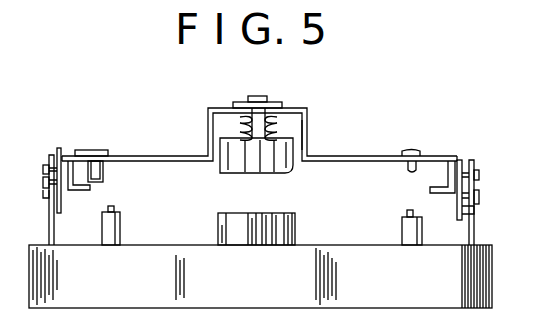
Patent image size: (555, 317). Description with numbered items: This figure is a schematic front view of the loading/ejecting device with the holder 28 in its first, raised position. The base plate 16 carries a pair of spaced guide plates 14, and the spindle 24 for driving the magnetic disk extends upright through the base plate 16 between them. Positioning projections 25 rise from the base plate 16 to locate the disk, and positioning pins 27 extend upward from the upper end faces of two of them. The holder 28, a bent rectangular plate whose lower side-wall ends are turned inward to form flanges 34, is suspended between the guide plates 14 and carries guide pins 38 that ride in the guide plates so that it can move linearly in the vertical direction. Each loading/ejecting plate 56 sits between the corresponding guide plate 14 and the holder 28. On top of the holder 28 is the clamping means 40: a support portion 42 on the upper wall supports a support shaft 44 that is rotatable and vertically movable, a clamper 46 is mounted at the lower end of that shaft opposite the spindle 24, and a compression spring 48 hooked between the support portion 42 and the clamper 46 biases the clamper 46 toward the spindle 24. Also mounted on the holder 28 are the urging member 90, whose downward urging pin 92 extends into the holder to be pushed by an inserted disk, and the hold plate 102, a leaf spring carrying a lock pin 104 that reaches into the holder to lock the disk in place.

The guide plate 14 is at (48, 226).
The base plate 16 is at (476, 283).
The spindle 24 is at (296, 224).
The positioning projection 25 is at (121, 226).
The positioning pin 27 is at (113, 208).
The holder 28 is at (148, 155).
The flange 34 is at (82, 190).
The guide pin 38 is at (42, 172).
The clamping means 40 is at (338, 111).
The support portion 42 is at (308, 148).
The support shaft 44 is at (263, 116).
The clamper 46 is at (225, 164).
The compression spring 48 is at (240, 125).
The loading/ejecting plate 56 is at (59, 148).
The urging member 90 is at (92, 150).
The urging pin 92 is at (103, 172).
The hold plate 102 is at (405, 151).
The lock pin 104 is at (407, 166).